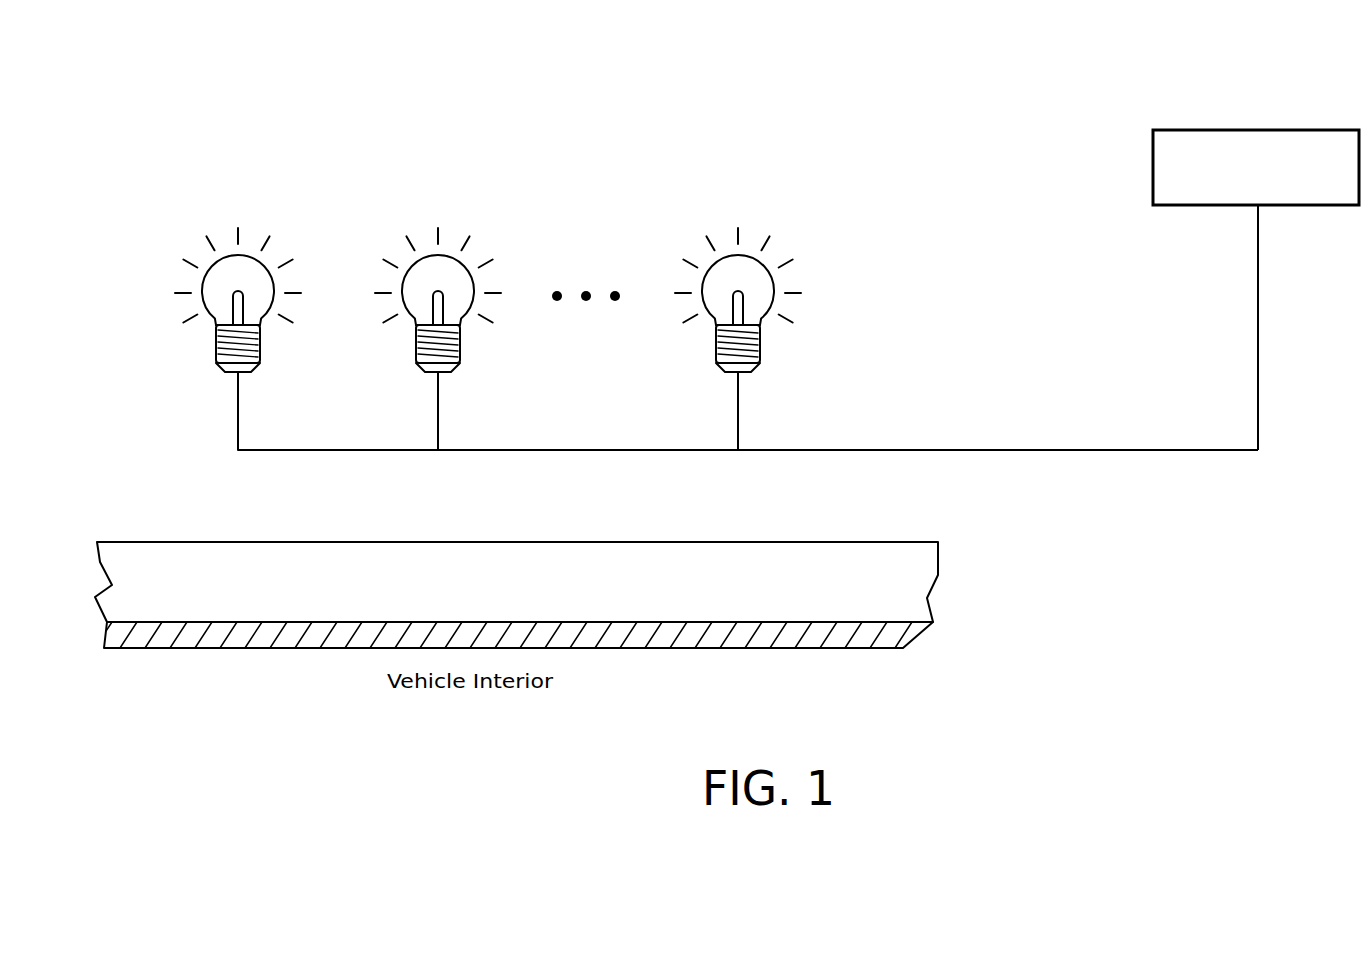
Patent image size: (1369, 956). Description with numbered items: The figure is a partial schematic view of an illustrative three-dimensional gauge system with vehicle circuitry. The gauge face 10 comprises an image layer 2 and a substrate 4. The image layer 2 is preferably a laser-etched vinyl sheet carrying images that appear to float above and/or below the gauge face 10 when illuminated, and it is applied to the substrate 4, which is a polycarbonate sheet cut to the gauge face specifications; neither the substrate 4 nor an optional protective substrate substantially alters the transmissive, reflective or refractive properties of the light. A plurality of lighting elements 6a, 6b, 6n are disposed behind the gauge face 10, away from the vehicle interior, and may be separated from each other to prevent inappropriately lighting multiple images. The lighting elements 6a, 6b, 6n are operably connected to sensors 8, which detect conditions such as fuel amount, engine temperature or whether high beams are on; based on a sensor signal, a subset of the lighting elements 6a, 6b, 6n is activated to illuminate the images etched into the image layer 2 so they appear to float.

The image layer 2 is at (895, 635).
The substrate 4 is at (898, 577).
The lighting element 6a is at (195, 243).
The lighting element 6b is at (395, 243).
The lighting element 6n is at (695, 243).
The sensors 8 is at (1275, 130).
The gauge face 10 is at (75, 542).